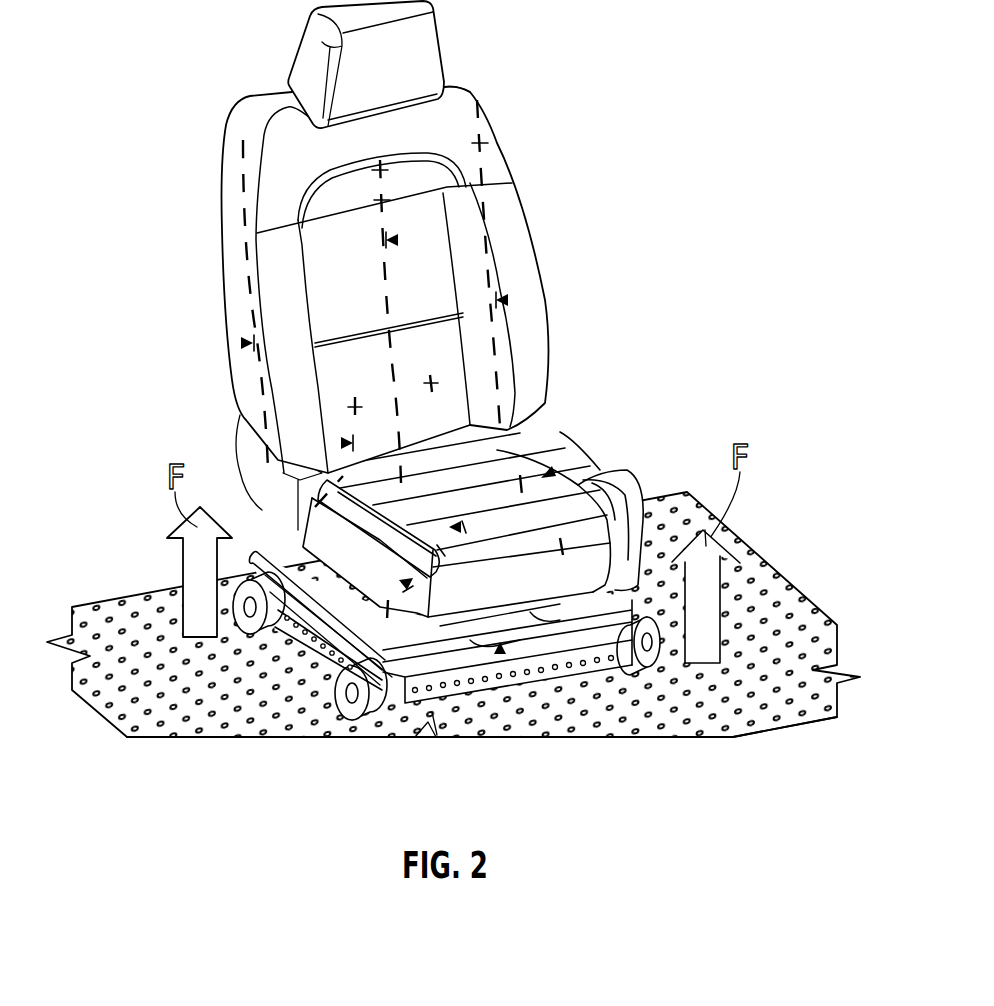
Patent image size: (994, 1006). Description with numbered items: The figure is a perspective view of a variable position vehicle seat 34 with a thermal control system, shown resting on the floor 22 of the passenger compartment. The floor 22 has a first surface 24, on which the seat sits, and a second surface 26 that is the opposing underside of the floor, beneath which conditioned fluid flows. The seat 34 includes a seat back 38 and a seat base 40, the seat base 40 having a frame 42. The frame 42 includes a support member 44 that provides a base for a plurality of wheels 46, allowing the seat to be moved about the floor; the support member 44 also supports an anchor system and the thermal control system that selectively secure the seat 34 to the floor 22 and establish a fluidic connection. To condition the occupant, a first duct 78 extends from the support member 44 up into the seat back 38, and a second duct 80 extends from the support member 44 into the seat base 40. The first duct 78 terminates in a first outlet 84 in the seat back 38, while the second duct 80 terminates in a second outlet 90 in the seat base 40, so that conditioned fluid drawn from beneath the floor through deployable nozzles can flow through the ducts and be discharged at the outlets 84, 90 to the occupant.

The floor 22 is at (472, 653).
The first surface 24 is at (817, 626).
The second surface 26 is at (773, 737).
The seat 34 is at (379, 403).
The seat back 38 is at (233, 288).
The seat base 40 is at (707, 541).
The frame 42 is at (438, 652).
The support member 44 is at (578, 668).
The wheels 46 is at (236, 603).
The first duct 78 is at (398, 240).
The second duct 80 is at (408, 586).
The first outlet 84 is at (378, 200).
The second outlet 90 is at (468, 537).